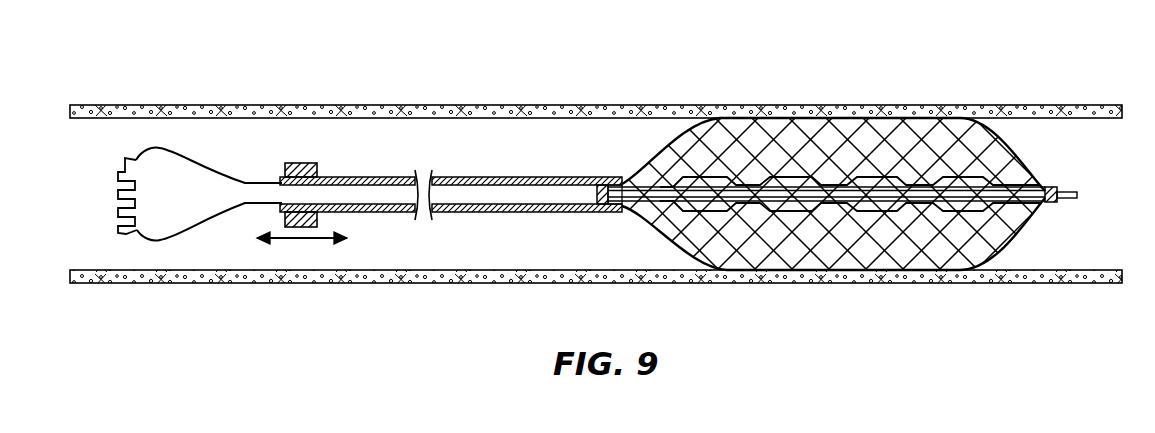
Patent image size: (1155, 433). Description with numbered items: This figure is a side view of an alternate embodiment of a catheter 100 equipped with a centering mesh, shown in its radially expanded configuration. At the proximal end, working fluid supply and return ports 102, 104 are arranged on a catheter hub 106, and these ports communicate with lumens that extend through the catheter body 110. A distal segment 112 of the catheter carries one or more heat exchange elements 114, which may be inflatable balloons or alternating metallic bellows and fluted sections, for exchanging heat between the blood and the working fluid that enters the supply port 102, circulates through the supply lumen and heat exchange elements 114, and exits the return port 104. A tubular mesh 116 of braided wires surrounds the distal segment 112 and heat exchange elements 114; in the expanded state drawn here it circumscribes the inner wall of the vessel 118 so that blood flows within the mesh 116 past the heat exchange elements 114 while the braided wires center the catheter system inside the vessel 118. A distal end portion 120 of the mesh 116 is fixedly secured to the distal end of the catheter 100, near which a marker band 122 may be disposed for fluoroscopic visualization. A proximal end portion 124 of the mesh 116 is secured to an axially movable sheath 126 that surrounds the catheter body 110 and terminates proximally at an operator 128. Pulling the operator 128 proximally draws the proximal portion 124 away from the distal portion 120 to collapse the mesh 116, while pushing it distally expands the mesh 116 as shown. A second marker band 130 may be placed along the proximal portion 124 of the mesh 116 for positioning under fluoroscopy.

The catheter 100 is at (238, 43).
The working fluid supply port 102 is at (128, 157).
The working fluid return port 104 is at (127, 234).
The catheter hub 106 is at (193, 163).
The catheter body 110 is at (262, 183).
The distal segment 112 is at (834, 178).
The heat exchange elements 114 is at (800, 177).
The tubular mesh 116 is at (990, 147).
The vessel 118 is at (416, 285).
The distal end portion of the mesh 120 is at (1017, 181).
The marker band 122 is at (1053, 203).
The proximal end portion of the mesh 124 is at (628, 186).
The axially movable sheath 126 is at (527, 213).
The operator 128 is at (300, 164).
The marker band 130 is at (600, 183).